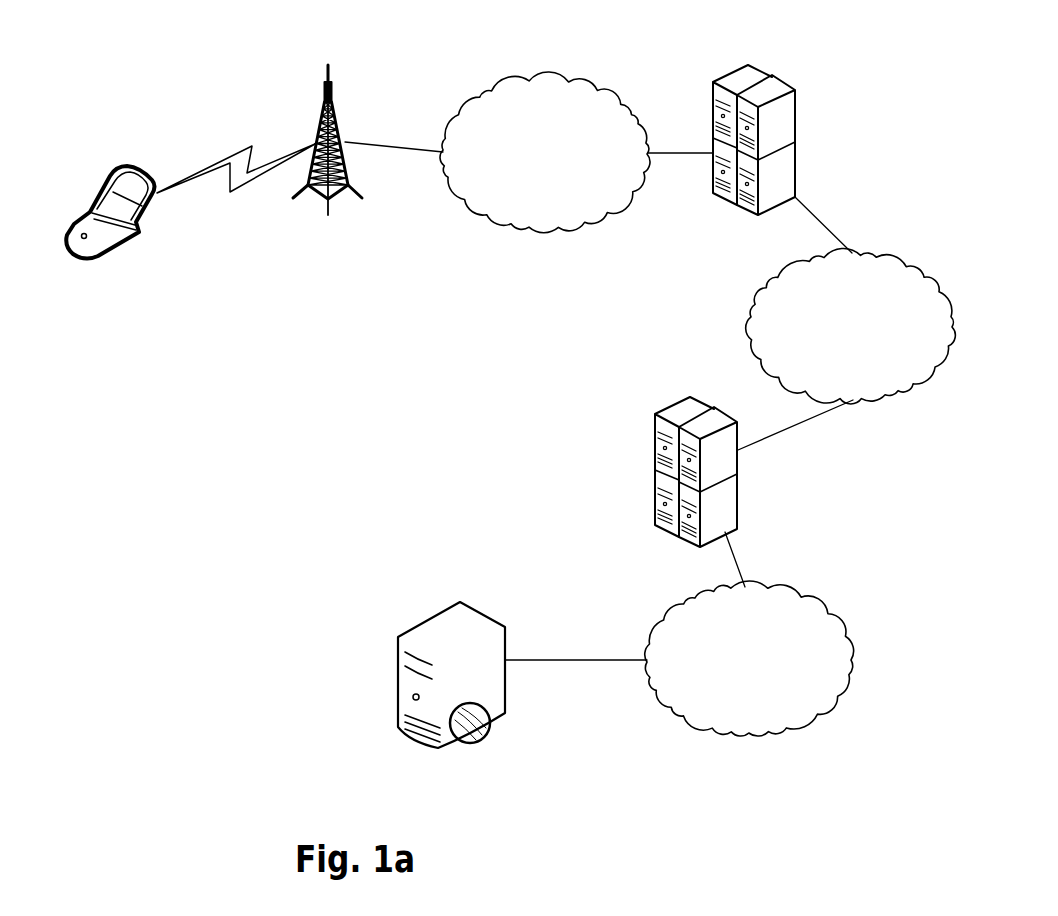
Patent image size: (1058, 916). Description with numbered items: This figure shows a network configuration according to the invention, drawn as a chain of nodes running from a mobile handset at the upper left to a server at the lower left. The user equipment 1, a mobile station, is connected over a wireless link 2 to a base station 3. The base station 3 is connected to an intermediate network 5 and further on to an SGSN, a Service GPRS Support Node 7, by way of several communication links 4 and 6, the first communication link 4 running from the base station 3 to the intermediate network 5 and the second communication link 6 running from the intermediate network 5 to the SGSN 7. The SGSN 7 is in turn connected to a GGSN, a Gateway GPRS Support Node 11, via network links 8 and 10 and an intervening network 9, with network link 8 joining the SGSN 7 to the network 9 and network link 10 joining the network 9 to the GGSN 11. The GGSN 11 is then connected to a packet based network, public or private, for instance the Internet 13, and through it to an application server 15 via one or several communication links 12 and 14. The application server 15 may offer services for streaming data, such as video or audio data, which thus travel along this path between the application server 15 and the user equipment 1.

The user equipment 1 is at (97, 197).
The wireless link 2 is at (223, 163).
The base station 3 is at (327, 78).
The communication link 4 is at (398, 143).
The intermediate network 5 is at (547, 80).
The communication link 6 is at (684, 148).
The SGSN (Service GPRS Support Node) 7 is at (738, 65).
The network link 8 is at (826, 222).
The network 9 is at (752, 328).
The network link 10 is at (793, 428).
The GGSN (Gateway GPRS Support Node) 11 is at (651, 435).
The communication link 12 is at (738, 555).
The Internet 13 is at (750, 733).
The communication link 14 is at (607, 660).
The application server 15 is at (458, 602).